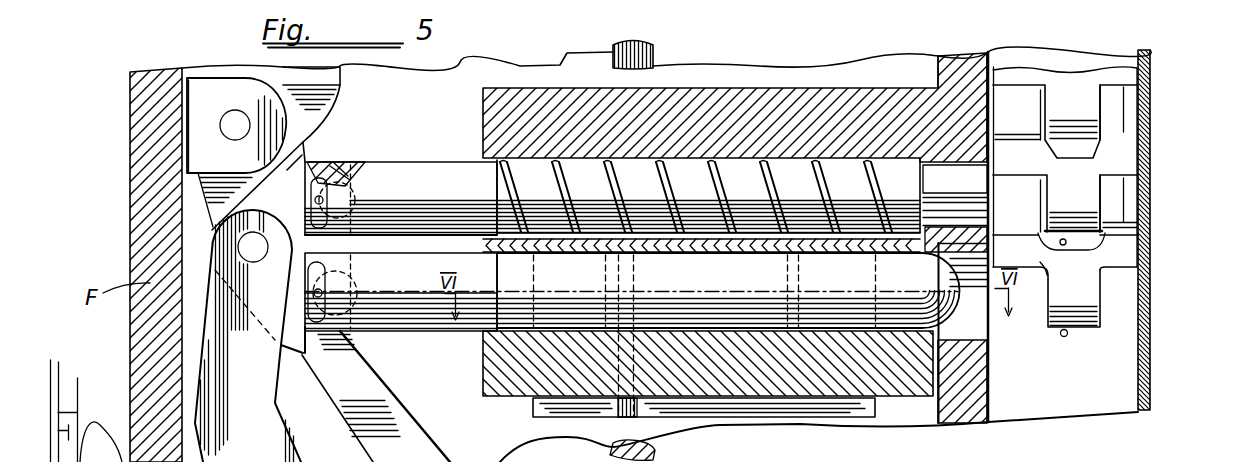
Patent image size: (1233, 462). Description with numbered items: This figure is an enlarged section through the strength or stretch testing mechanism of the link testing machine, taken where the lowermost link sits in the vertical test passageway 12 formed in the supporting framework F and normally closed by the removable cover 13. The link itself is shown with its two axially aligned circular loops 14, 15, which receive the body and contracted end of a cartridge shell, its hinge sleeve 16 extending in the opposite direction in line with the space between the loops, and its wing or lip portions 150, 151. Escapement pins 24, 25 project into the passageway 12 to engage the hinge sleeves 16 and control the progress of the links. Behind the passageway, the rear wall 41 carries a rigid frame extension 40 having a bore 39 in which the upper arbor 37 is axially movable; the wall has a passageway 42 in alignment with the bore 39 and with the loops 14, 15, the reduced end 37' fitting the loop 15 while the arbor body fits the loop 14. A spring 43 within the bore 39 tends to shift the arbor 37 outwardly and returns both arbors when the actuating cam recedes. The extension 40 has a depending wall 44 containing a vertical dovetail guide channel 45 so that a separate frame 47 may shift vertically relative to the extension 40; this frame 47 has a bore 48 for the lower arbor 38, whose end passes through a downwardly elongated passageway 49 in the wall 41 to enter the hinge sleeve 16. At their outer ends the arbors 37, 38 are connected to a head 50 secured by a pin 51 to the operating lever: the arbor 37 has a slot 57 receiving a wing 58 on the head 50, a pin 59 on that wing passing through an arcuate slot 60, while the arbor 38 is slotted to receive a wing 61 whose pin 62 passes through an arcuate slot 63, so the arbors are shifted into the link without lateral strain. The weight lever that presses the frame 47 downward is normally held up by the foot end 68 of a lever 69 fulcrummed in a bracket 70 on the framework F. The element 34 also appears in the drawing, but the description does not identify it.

The test passageway 12 is at (1115, 388).
The removable cover 13 is at (1150, 343).
The circular loop 14 is at (1023, 192).
The circular loop 15 is at (1115, 200).
The wing or lip portion 151 is at (1120, 256).
The hinge sleeve 16 is at (1085, 298).
The escapement pin 24 is at (1063, 245).
The escapement pin 25 is at (1064, 337).
The stud 34 is at (655, 52).
The upper arbor 37 is at (708, 146).
The reduced-diameter end of arbor 37' is at (955, 153).
The lower arbor 38 is at (763, 300).
The bore 39 is at (693, 165).
The frame extension 40 is at (885, 103).
The rear wall 41 is at (972, 403).
The passageway 42 is at (990, 55).
The spring 43 is at (723, 196).
The depending wall 44 is at (875, 410).
The dovetail guide channel 45 is at (640, 410).
The frame 47 is at (497, 366).
The bore 48 is at (517, 331).
The passageway 49 is at (980, 323).
The head 50 is at (317, 140).
The pin 51 is at (253, 262).
The slot 57 is at (342, 172).
The wing 58 is at (336, 162).
The pin 59 is at (327, 200).
The arcuate slot 60 is at (401, 198).
The wing 61 is at (340, 283).
The pin 62 is at (352, 302).
The arcuate slot 63 is at (328, 272).
The foot end 68 is at (300, 76).
The lever 69 is at (350, 388).
The bracket 70 is at (212, 108).
The wing or lip portion 150 is at (1025, 257).
The supporting framework F is at (156, 265).